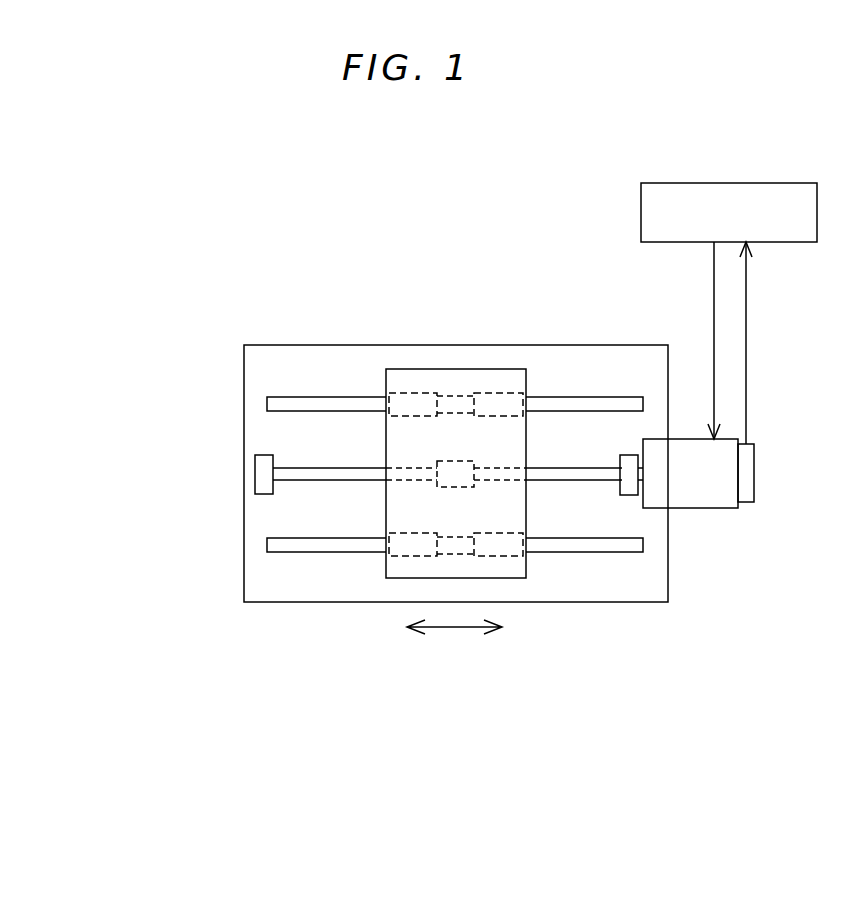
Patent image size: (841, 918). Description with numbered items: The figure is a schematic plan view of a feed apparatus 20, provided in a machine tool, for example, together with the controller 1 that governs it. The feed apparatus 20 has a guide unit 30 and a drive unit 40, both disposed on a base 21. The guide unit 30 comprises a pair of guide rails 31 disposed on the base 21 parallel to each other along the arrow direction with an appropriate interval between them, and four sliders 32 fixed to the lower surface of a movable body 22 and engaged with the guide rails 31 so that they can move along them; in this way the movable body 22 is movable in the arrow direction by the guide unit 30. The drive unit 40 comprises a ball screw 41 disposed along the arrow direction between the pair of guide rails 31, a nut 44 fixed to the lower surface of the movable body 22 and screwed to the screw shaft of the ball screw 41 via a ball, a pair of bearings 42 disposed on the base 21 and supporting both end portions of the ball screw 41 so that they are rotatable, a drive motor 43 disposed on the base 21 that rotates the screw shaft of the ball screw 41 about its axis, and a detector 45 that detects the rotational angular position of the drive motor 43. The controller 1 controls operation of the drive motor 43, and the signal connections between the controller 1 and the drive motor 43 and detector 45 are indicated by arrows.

The controller 1 is at (733, 183).
The feed apparatus 20 is at (422, 472).
The base 21 is at (250, 359).
The movable body 22 is at (407, 378).
The guide unit 30 is at (436, 472).
The guide rails 31 is at (331, 400).
The sliders 32 is at (496, 398).
The drive unit 40 is at (441, 459).
The ball screw 41 is at (315, 469).
The bearings 42 is at (256, 473).
The drive motor 43 is at (692, 504).
The nut 44 is at (457, 467).
The detector 45 is at (747, 504).